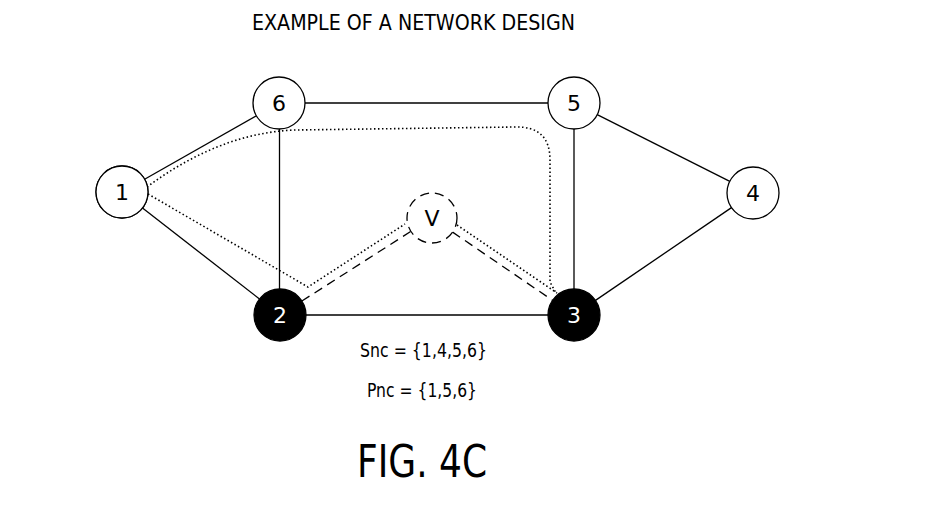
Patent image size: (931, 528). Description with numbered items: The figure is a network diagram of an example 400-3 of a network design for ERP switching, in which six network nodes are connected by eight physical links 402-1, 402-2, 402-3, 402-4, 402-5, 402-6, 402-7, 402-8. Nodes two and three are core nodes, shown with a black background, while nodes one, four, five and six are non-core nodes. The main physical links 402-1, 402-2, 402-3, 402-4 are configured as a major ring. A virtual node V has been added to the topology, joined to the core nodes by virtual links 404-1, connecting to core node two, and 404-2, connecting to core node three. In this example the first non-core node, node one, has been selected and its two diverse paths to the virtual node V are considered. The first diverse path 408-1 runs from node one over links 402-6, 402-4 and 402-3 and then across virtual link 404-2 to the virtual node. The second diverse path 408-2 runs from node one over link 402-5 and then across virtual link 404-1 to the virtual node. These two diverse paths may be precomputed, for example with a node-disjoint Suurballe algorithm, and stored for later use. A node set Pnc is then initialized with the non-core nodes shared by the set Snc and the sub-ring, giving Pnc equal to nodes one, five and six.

The example 400-3 is at (121, 40).
The physical link 402-1 is at (433, 313).
The physical link 402-2 is at (282, 170).
The physical link 402-3 is at (577, 190).
The physical link 402-4 is at (432, 102).
The physical link 402-5 is at (205, 258).
The physical link 402-6 is at (205, 146).
The physical link 402-7 is at (665, 256).
The physical link 402-8 is at (666, 148).
The virtual link 404-1 is at (360, 262).
The virtual link 404-2 is at (500, 264).
The first diverse path 408-1 is at (480, 130).
The second diverse path 408-2 is at (256, 252).